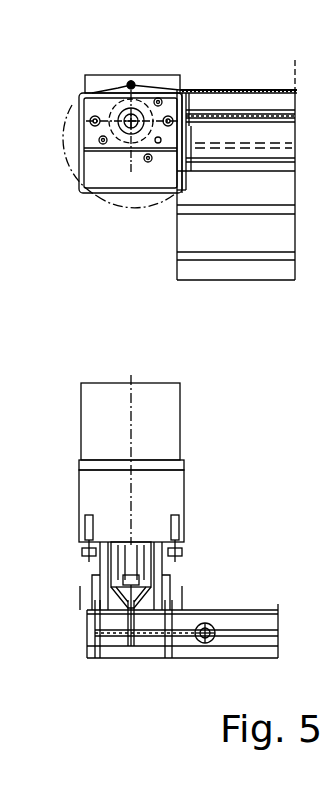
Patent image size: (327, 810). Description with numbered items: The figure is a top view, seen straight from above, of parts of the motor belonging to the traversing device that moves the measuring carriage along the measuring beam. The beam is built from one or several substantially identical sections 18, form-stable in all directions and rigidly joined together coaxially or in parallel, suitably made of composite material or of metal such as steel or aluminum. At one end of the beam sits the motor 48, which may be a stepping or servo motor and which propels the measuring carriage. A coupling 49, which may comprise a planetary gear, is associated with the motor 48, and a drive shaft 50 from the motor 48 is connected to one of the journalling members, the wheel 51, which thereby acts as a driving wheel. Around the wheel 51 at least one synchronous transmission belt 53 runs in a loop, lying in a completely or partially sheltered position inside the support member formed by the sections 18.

The section 18 is at (238, 270).
The motor 48 is at (105, 178).
The coupling 49 is at (150, 560).
The drive shaft 50 is at (134, 640).
The wheel 51 is at (110, 78).
The synchronous transmission belt 53 is at (247, 88).